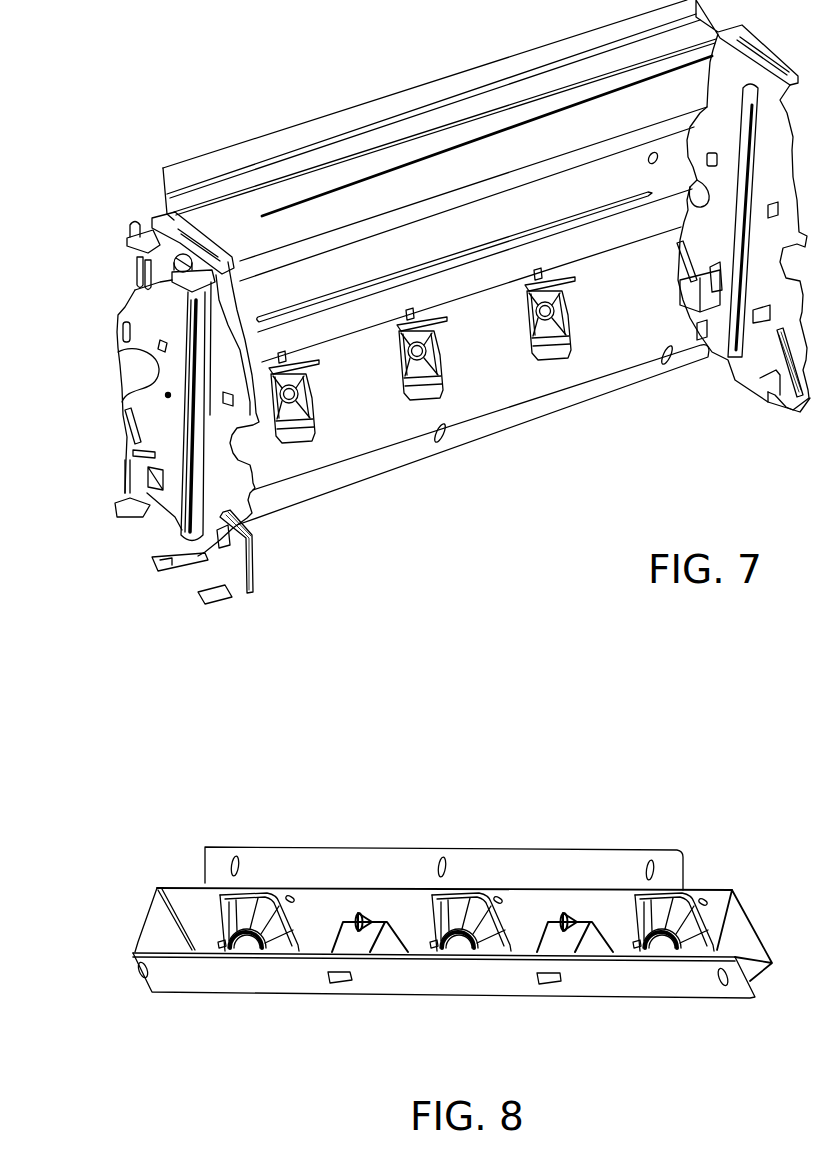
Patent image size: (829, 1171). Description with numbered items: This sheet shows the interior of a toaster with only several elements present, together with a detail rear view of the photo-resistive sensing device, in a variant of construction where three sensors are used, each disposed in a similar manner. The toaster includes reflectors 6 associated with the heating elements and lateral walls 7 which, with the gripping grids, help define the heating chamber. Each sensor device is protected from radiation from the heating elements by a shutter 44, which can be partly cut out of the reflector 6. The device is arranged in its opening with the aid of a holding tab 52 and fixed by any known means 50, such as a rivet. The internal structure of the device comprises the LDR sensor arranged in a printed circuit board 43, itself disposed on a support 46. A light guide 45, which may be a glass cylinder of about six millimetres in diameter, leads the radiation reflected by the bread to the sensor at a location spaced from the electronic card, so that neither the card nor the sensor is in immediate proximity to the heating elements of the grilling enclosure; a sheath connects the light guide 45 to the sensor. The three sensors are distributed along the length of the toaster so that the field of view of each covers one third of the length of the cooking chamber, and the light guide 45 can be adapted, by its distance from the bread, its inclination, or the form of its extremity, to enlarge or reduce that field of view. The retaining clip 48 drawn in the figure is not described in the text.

In FIG. 7, the reflector 6 is at (627, 194).
In FIG. 7, the lateral wall 7 is at (235, 478).
In FIG. 8, the printed circuit board 43 is at (288, 985).
In FIG. 7, the shutter 44 is at (415, 313).
In FIG. 7, the light guide 45 is at (424, 351).
In FIG. 8, the light guide 45 is at (682, 1000).
In FIG. 8, the support 46 is at (157, 918).
In FIG. 7, the retaining clip 48 is at (428, 360).
In FIG. 8, the retaining clip 48 is at (677, 926).
In FIG. 7, the fixing means 50 is at (398, 315).
In FIG. 7, the holding tab 52 is at (408, 398).